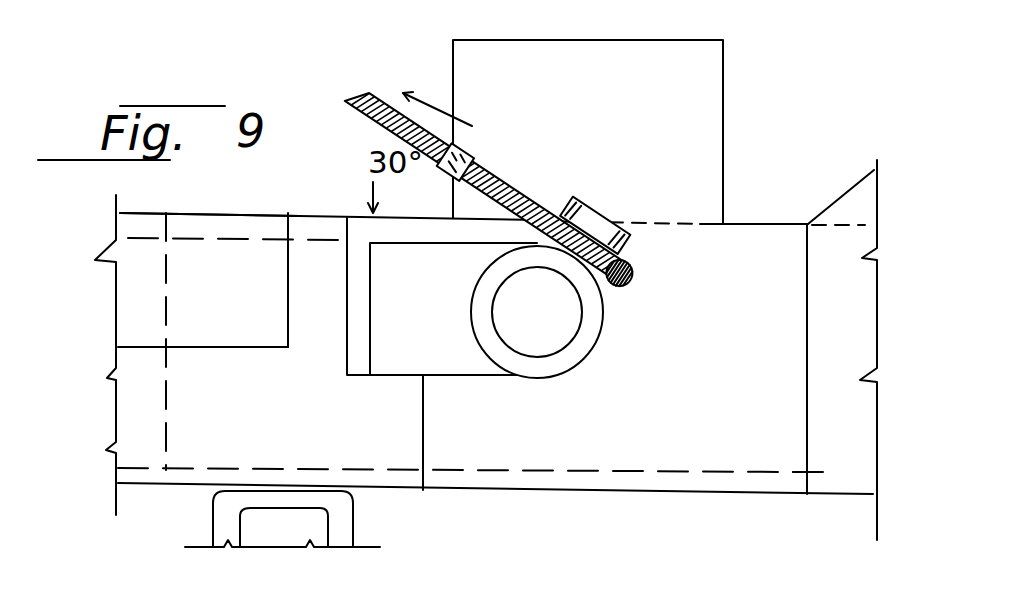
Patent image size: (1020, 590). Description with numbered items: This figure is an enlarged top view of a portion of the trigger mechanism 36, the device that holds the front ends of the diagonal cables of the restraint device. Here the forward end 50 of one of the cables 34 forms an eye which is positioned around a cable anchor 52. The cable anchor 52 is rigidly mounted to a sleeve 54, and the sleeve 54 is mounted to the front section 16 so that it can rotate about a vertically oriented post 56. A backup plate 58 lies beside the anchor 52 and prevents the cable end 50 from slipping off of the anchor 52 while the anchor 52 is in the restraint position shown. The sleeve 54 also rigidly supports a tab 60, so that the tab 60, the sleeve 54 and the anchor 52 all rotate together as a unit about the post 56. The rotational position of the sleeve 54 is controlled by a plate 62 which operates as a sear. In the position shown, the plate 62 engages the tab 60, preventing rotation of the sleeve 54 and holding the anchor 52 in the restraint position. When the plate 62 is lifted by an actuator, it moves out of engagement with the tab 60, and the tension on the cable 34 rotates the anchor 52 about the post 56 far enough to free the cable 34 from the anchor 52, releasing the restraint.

The front section 16 is at (758, 430).
The diagonal cable 34 is at (357, 117).
The trigger mechanism 36 is at (332, 203).
The forward end of cable 50 is at (633, 280).
The cable anchor 52 is at (630, 247).
The sleeve 54 is at (592, 337).
The post 56 is at (548, 342).
The backup plate 58 is at (550, 143).
The tab 60 is at (468, 366).
The plate 62 is at (402, 447).